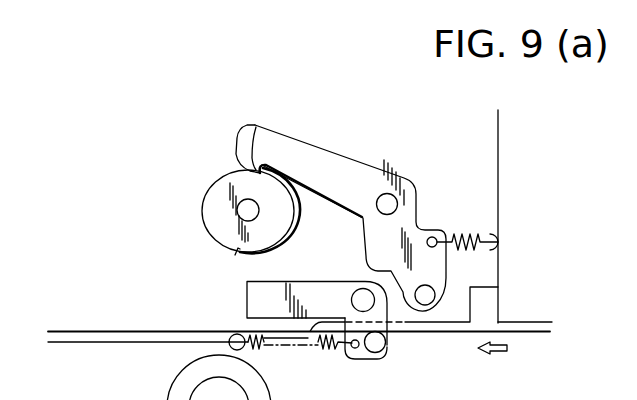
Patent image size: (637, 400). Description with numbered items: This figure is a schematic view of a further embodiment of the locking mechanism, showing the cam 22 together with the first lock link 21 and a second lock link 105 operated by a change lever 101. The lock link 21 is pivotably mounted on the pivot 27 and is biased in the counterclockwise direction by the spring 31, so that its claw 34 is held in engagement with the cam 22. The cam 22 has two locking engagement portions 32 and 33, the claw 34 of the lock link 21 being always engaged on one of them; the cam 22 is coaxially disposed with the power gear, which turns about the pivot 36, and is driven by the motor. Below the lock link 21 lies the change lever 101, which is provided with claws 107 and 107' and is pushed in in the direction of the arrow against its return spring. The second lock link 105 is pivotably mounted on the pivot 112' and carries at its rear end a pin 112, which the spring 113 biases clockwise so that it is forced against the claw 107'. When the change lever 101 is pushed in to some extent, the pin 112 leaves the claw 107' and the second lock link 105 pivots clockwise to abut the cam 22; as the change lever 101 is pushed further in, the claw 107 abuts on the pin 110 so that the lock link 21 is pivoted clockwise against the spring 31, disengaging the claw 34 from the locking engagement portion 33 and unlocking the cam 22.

The lock link 21 is at (350, 178).
The cam 22 is at (217, 192).
The pivot 27 is at (392, 202).
The spring 31 is at (475, 226).
The locking engagement portion 32 is at (240, 256).
The locking engagement portion 33 is at (283, 170).
The claw 34 is at (256, 126).
The pivot 36 is at (244, 212).
The change lever 101 is at (537, 333).
The second lock link 105 is at (254, 303).
The claw 107 is at (437, 297).
The claw 107' is at (370, 359).
The pin 110 is at (428, 299).
The pin 112 is at (404, 366).
The pivot 112' is at (345, 285).
The spring 113 is at (300, 350).